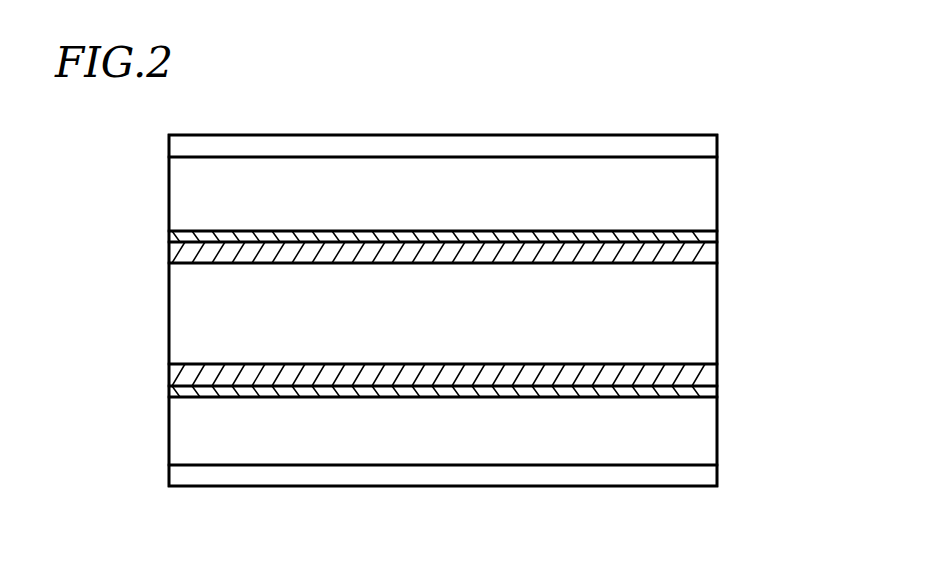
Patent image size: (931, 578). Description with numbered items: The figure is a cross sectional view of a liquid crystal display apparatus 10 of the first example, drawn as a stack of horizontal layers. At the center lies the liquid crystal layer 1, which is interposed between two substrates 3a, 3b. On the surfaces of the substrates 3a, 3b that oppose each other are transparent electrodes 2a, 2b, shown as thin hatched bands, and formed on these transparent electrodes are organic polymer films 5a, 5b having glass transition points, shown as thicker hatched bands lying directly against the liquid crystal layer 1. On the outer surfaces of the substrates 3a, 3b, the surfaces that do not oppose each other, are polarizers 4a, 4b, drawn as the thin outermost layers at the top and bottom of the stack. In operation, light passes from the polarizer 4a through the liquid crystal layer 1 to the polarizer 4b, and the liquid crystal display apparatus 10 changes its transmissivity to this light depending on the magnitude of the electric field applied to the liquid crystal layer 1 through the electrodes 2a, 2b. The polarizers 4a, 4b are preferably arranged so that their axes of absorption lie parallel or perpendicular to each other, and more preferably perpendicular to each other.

The liquid crystal display apparatus 10 is at (272, 109).
The liquid crystal layer 1 is at (708, 313).
The transparent electrode 2a is at (707, 235).
The transparent electrode 2b is at (708, 393).
The substrate 3a is at (705, 193).
The substrate 3b is at (706, 437).
The polarizer 4a is at (709, 148).
The polarizer 4b is at (708, 475).
The organic polymer film 5a is at (710, 252).
The organic polymer film 5b is at (712, 372).